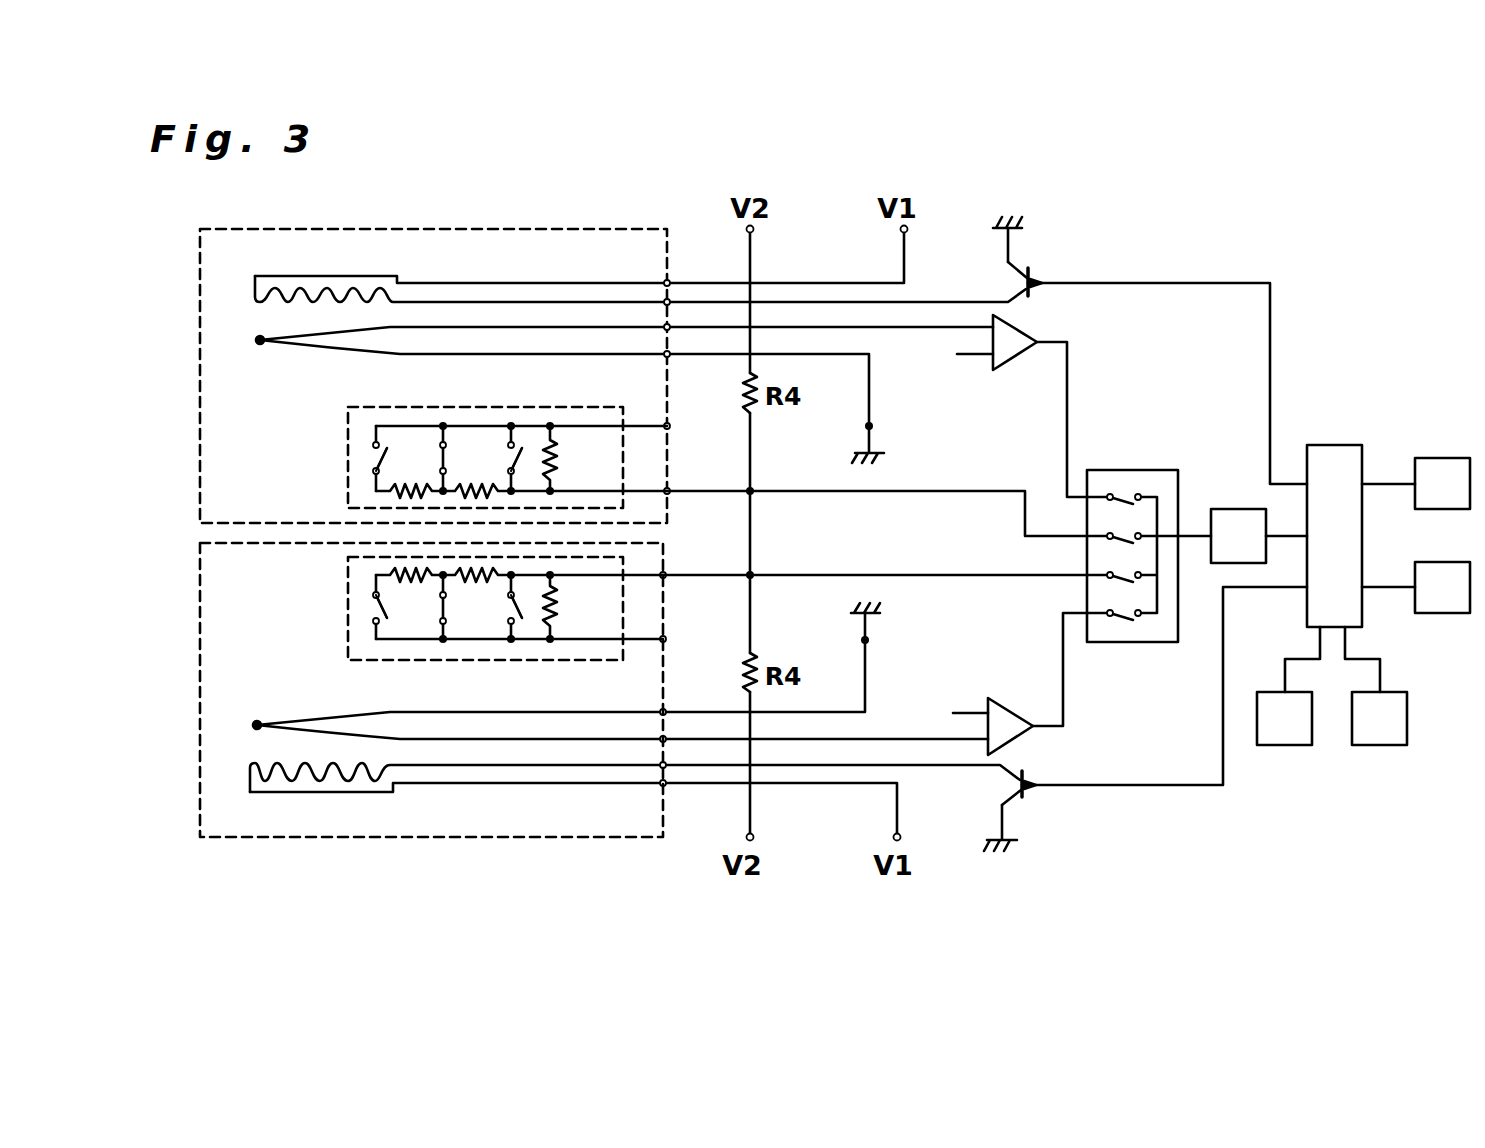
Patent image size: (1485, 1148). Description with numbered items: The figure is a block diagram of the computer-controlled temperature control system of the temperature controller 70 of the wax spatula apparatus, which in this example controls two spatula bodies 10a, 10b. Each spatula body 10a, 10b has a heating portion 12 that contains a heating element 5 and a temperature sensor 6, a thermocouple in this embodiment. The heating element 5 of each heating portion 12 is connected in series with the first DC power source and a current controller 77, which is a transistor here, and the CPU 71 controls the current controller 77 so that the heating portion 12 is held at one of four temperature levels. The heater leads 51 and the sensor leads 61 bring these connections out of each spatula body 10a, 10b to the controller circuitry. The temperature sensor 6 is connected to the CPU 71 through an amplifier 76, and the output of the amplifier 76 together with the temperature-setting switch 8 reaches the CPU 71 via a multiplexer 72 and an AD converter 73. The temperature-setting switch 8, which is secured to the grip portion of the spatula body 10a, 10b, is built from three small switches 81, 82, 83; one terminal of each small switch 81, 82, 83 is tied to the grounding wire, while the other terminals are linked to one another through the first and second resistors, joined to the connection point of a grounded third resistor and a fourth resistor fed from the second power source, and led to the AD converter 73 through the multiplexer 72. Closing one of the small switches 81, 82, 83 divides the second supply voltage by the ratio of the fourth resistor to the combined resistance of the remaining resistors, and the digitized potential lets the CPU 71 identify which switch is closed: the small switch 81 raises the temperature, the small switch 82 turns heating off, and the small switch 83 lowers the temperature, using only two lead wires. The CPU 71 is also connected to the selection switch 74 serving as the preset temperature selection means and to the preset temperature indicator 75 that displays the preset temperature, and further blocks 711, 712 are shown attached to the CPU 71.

The spatula body 10a is at (467, 229).
The spatula body 10b is at (417, 838).
The heating portion 12 is at (292, 276).
The heating element 5 is at (275, 298).
The temperature sensor 6 is at (305, 348).
The heater electrode leads 51 is at (570, 282).
The thermistor lead terminals 61 is at (594, 354).
The temperature-setting switch 8 is at (348, 492).
The small switch 81 is at (372, 460).
The small switch 82 is at (443, 424).
The small switch 83 is at (512, 440).
The temperature controller 70 is at (1193, 803).
The CPU 71 is at (1330, 445).
The multiplexer 72 is at (1130, 470).
The AD converter 73 is at (1237, 508).
The selection switch 74 is at (1443, 458).
The preset temperature indicator 75 is at (1447, 615).
The amplifier 76 is at (1013, 356).
The current controller 77 is at (1042, 272).
The timer 711 is at (1375, 748).
The counter 712 is at (1280, 748).